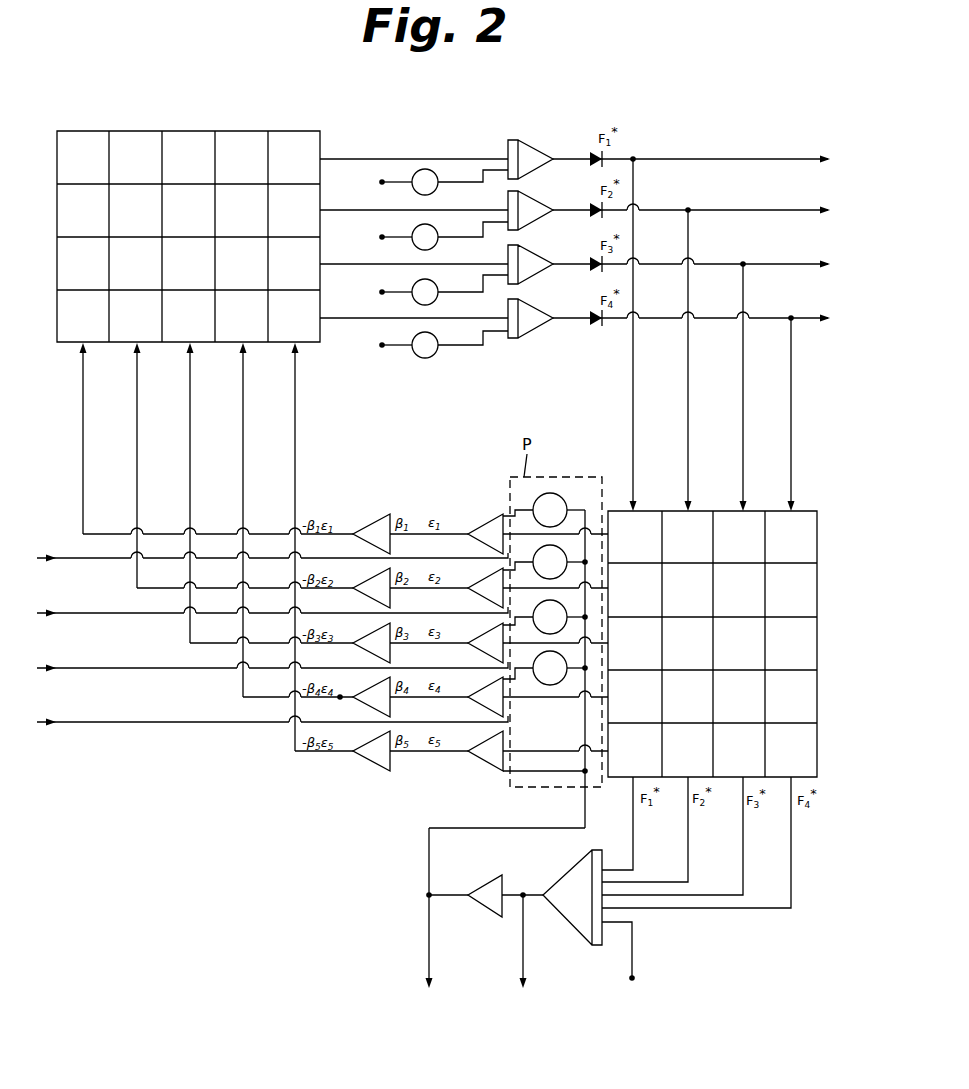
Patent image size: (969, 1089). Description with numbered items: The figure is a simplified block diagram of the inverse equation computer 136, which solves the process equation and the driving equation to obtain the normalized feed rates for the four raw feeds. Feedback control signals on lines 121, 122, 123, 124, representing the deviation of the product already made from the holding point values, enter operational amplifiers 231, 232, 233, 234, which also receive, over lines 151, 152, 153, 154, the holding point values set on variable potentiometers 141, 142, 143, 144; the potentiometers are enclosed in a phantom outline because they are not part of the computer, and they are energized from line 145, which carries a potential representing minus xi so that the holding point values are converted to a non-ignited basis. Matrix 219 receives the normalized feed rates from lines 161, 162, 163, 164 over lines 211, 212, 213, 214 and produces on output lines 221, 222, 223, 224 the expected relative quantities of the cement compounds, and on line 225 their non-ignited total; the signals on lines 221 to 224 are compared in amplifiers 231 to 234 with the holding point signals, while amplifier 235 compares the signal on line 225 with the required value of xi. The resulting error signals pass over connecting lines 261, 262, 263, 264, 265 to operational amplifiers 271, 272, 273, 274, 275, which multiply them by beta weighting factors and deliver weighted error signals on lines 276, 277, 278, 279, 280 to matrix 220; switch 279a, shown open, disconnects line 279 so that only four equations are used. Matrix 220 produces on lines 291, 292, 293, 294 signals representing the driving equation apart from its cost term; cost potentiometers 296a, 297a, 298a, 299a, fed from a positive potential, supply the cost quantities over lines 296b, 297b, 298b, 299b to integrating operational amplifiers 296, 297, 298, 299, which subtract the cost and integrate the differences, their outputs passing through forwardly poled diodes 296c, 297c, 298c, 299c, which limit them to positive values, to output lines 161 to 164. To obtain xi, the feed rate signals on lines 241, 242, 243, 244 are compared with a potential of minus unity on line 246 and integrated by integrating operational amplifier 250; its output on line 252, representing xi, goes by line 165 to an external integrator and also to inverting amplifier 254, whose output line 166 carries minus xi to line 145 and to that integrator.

The matrix 220 is at (189, 108).
The output line 291 is at (333, 159).
The output line 292 is at (333, 210).
The output line 293 is at (333, 264).
The output line 294 is at (333, 318).
The integrating operational amplifier 296 is at (556, 138).
The potentiometer 296a is at (416, 177).
The line 296b is at (456, 182).
The forwardly poled diode 296c is at (590, 164).
The integrating operational amplifier 297 is at (530, 206).
The potentiometer 297a is at (415, 232).
The line 297b is at (459, 237).
The forwardly poled diode 297c is at (592, 216).
The integrating operational amplifier 298 is at (535, 259).
The potentiometer 298a is at (415, 287).
The line 298b is at (456, 292).
The forwardly poled diode 298c is at (592, 270).
The integrating operational amplifier 299 is at (535, 313).
The potentiometer 299a is at (412, 340).
The line 299b is at (456, 345).
The forwardly poled diode 299c is at (596, 326).
The output line 161 is at (677, 160).
The output line 162 is at (709, 212).
The output line 163 is at (750, 266).
The output line 164 is at (773, 320).
The line 211 is at (634, 392).
The line 212 is at (689, 395).
The line 213 is at (745, 400).
The line 214 is at (792, 405).
The inverse equation computer 136 is at (467, 421).
The output line 276 is at (84, 398).
The output line 277 is at (138, 414).
The output line 278 is at (191, 429).
The output line 279 is at (244, 439).
The switch 279a is at (338, 698).
The output line 280 is at (322, 447).
The line 121 is at (99, 559).
The line 122 is at (176, 614).
The line 123 is at (218, 669).
The line 124 is at (262, 723).
The operational amplifier 271 is at (371, 534).
The operational amplifier 272 is at (371, 588).
The operational amplifier 273 is at (371, 643).
The operational amplifier 274 is at (371, 697).
The operational amplifier 275 is at (371, 751).
The connecting line 261 is at (417, 528).
The connecting line 262 is at (417, 588).
The connecting line 263 is at (417, 643).
The connecting line 264 is at (417, 697).
The connecting line 265 is at (417, 751).
The operational amplifier 231 is at (485, 534).
The operational amplifier 232 is at (485, 588).
The operational amplifier 233 is at (485, 643).
The operational amplifier 234 is at (485, 697).
The operational amplifier 235 is at (526, 751).
The line 151 is at (521, 508).
The line 152 is at (521, 562).
The line 153 is at (521, 617).
The line 154 is at (521, 668).
The variable potentiometer 141 is at (561, 498).
The variable potentiometer 142 is at (560, 553).
The variable potentiometer 143 is at (562, 610).
The variable potentiometer 144 is at (562, 664).
The output line 221 is at (600, 532).
The output line 222 is at (600, 587).
The output line 223 is at (600, 642).
The output line 224 is at (600, 696).
The line 225 is at (600, 750).
The line 145 is at (584, 802).
The matrix 219 is at (616, 500).
The line 241 is at (634, 850).
The line 242 is at (689, 856).
The line 243 is at (744, 861).
The line 244 is at (792, 866).
The line 246 is at (633, 935).
The integrating operational amplifier 250 is at (572, 897).
The line 252 is at (545, 888).
The inverting amplifier 254 is at (485, 896).
The line 165 is at (525, 940).
The output line 166 is at (431, 924).